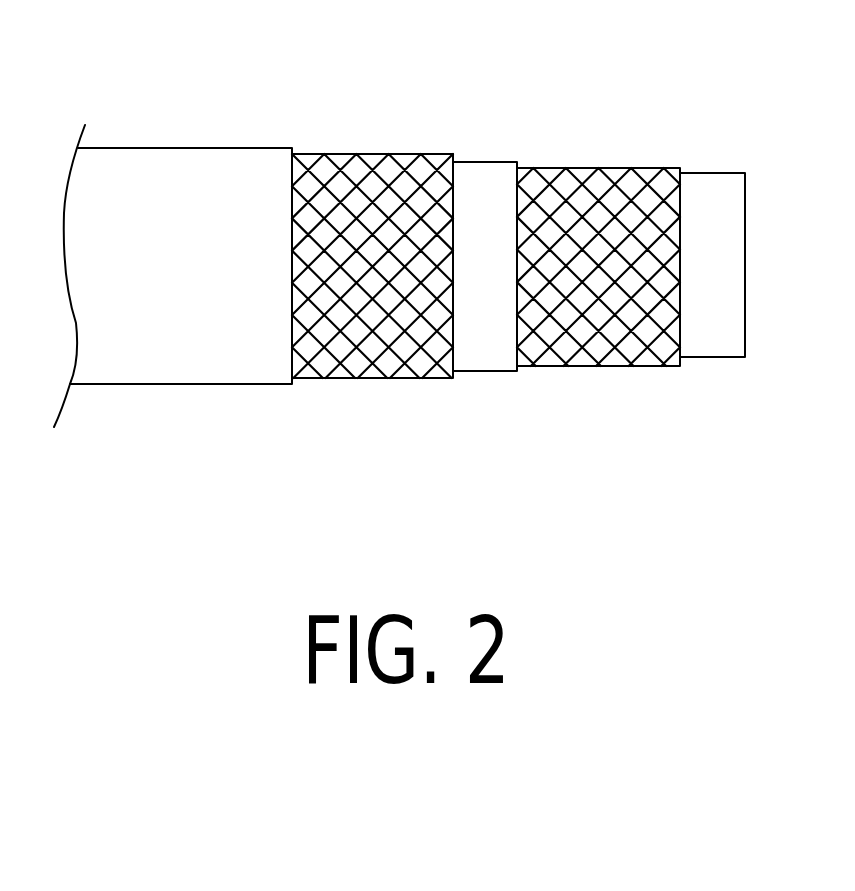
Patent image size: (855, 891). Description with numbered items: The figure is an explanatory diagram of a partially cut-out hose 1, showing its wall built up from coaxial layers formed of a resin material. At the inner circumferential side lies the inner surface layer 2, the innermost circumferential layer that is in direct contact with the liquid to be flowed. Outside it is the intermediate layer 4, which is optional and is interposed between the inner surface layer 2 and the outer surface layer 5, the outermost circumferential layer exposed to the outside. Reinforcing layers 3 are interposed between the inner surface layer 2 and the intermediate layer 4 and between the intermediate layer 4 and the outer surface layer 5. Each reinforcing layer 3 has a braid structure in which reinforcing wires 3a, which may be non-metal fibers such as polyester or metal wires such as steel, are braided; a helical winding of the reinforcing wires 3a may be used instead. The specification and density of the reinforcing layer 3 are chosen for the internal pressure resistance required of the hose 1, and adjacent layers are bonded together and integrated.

The hose 1 is at (411, 262).
The inner surface layer 2 is at (707, 357).
The reinforcing layer 3 is at (486, 282).
The reinforcing wire 3a is at (322, 178).
The intermediate layer 4 is at (480, 371).
The outer surface layer 5 is at (158, 384).